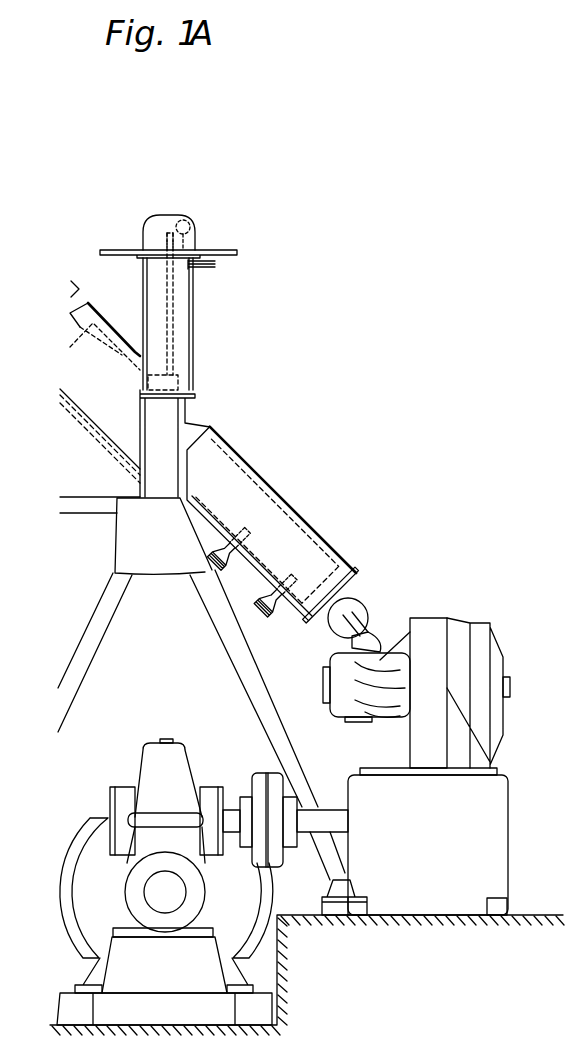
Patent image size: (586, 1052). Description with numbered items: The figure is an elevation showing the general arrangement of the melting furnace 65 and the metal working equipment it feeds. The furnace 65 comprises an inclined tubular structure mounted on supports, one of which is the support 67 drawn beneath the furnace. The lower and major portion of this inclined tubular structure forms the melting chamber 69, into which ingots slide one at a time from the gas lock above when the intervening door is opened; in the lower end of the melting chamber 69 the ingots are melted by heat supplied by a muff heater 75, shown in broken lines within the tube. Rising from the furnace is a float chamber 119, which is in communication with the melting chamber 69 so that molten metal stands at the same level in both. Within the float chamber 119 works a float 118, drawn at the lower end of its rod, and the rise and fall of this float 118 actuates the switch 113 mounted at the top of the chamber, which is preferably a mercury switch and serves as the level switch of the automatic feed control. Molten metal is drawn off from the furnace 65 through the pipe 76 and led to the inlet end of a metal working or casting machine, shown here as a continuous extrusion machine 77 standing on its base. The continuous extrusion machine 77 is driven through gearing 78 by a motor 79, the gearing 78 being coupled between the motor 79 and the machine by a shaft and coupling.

The switch 113 is at (196, 217).
The float chamber 119 is at (183, 297).
The muff heater 75 is at (137, 345).
The float 118 is at (178, 380).
The furnace 65 is at (213, 400).
The support 67 is at (135, 495).
The melting chamber 69 is at (85, 303).
The pipe 76 is at (363, 614).
The continuous extrusion machine 77 is at (440, 615).
The gearing 78 is at (190, 747).
The motor 79 is at (72, 910).